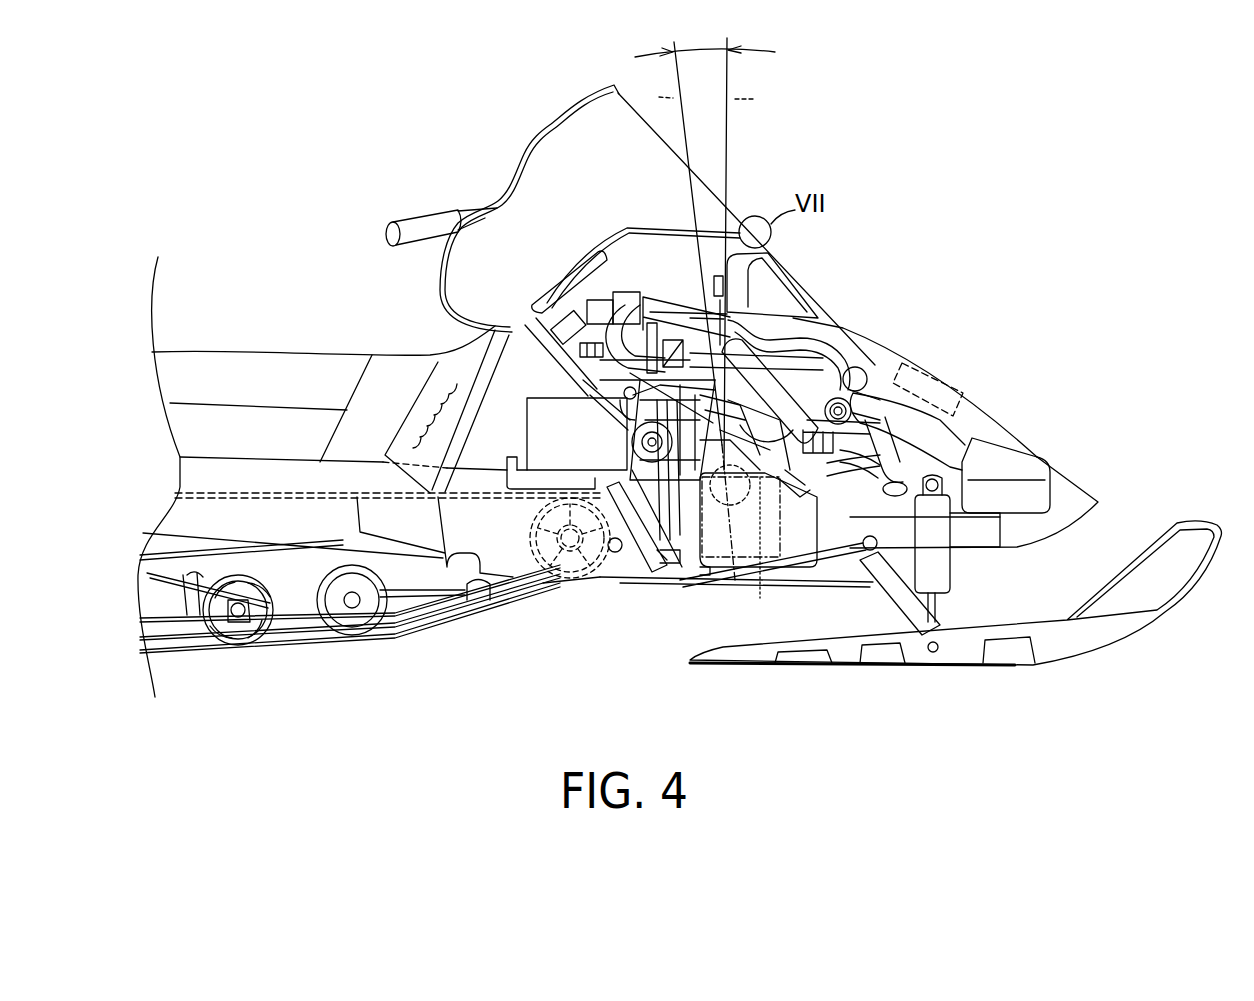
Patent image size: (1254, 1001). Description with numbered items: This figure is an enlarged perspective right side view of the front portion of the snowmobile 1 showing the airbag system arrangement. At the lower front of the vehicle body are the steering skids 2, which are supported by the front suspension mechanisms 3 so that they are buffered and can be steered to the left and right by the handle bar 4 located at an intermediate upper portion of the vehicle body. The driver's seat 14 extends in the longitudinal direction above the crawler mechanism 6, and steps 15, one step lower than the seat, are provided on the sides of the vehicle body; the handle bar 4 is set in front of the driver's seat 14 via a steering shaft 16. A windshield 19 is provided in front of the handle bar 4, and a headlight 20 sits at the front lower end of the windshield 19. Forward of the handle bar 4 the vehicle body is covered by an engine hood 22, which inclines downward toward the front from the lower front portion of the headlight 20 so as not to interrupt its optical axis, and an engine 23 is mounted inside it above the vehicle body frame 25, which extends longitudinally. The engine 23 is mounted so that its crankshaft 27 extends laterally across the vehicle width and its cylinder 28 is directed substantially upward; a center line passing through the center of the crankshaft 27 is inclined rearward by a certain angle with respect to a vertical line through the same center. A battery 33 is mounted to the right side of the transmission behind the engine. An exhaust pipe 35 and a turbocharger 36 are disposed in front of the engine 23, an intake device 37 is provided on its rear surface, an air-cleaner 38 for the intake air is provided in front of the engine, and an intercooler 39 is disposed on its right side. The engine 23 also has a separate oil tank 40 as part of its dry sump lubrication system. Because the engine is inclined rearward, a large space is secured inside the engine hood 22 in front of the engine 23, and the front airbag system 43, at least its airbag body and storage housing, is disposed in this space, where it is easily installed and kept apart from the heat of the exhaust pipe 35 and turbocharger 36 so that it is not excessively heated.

The snowmobile 1 is at (306, 178).
The steering skid 2 is at (1060, 662).
The front suspension mechanism 3 is at (885, 600).
The handle bar 4 is at (421, 213).
The crawler mechanism 6 is at (350, 652).
The driver's seat 14 is at (250, 350).
The step 15 is at (363, 460).
The steering shaft 16 is at (560, 376).
The windshield 19 is at (712, 178).
The headlight 20 is at (793, 273).
The engine hood 22 is at (1000, 410).
The engine 23 is at (833, 345).
The vehicle body frame 25 is at (990, 540).
The crankshaft 27 is at (741, 552).
The cylinder 28 is at (673, 320).
The battery 33 is at (527, 433).
The exhaust pipe 35 is at (830, 482).
The turbocharger 36 is at (885, 343).
The intake device 37 is at (620, 297).
The air-cleaner 38 is at (1040, 450).
The intercooler 39 is at (823, 350).
The oil tank 40 is at (745, 560).
The front airbag system 43 is at (990, 345).